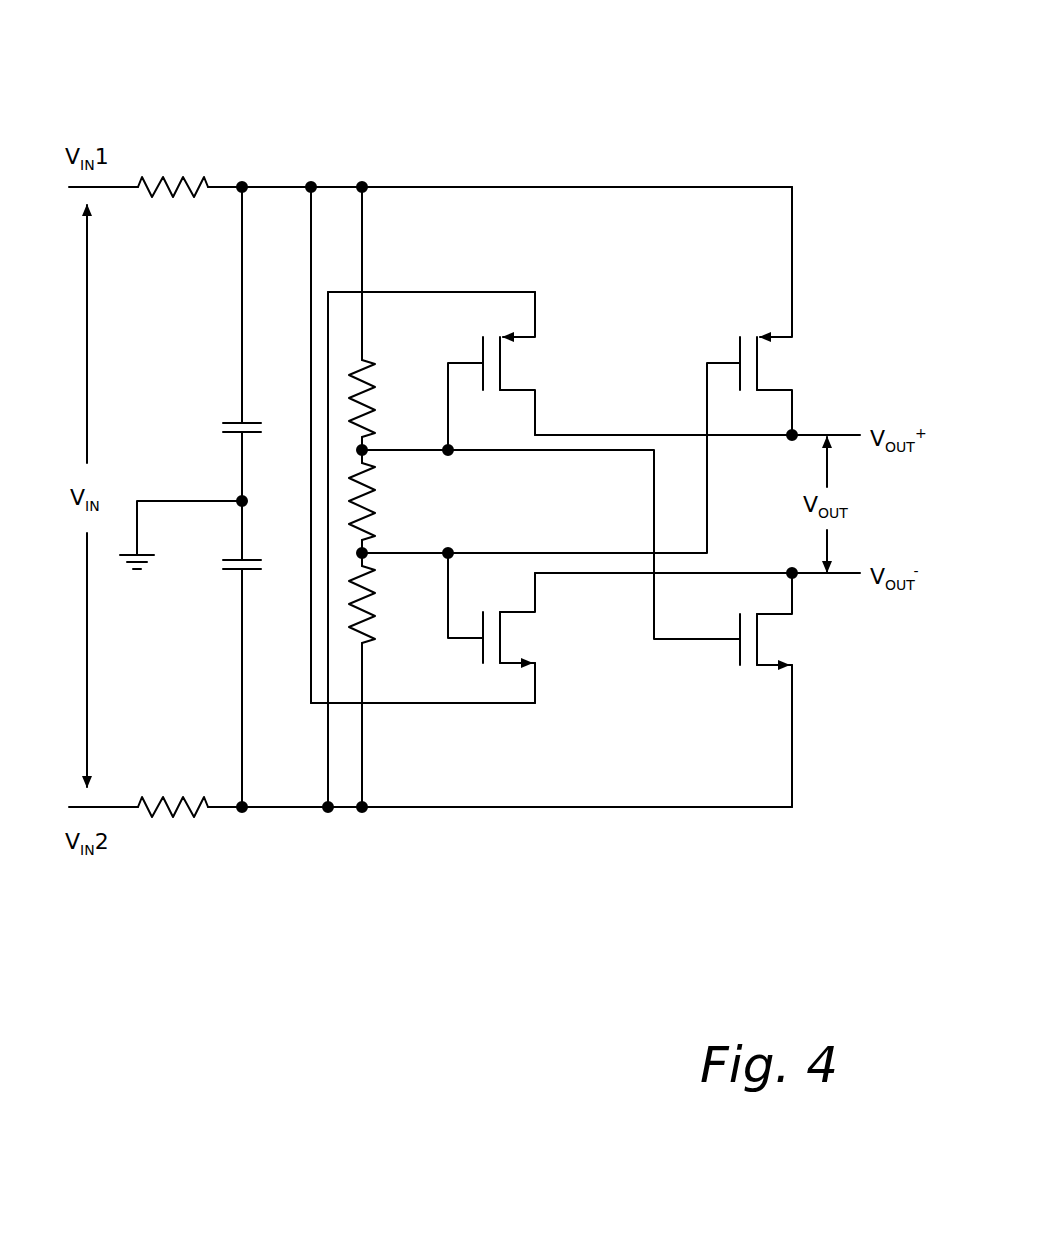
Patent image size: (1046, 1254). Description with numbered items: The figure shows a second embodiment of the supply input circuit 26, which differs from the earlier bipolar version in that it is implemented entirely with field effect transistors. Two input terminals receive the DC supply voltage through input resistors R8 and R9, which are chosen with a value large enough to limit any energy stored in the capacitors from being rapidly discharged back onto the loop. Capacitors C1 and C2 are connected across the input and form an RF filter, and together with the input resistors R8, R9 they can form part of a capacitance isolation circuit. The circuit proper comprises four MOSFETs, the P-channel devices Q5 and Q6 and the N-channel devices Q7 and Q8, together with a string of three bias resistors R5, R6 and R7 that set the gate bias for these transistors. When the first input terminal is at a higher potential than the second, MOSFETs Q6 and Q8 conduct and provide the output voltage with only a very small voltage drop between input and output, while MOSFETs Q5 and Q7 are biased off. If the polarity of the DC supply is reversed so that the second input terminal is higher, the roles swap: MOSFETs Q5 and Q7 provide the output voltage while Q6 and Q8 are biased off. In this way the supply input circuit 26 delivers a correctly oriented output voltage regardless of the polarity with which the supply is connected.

The supply input circuit 26 is at (766, 120).
The bias resistor R5 is at (380, 318).
The bias resistor R6 is at (380, 501).
The bias resistor R7 is at (380, 680).
The input resistor R8 is at (173, 171).
The input resistor R9 is at (173, 791).
The capacitor C1 is at (218, 344).
The capacitor C2 is at (218, 654).
The P-channel MOSFET Q5 is at (507, 371).
The P-channel MOSFET Q6 is at (780, 311).
The N-channel MOSFET Q7 is at (507, 628).
The N-channel MOSFET Q8 is at (783, 690).